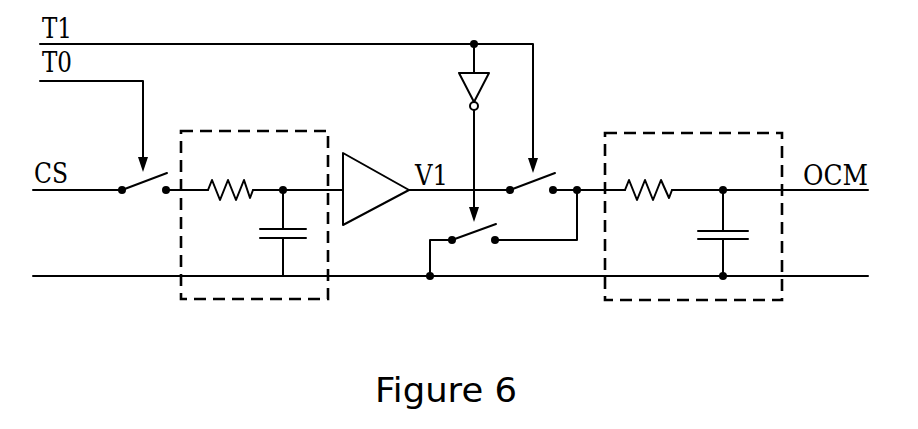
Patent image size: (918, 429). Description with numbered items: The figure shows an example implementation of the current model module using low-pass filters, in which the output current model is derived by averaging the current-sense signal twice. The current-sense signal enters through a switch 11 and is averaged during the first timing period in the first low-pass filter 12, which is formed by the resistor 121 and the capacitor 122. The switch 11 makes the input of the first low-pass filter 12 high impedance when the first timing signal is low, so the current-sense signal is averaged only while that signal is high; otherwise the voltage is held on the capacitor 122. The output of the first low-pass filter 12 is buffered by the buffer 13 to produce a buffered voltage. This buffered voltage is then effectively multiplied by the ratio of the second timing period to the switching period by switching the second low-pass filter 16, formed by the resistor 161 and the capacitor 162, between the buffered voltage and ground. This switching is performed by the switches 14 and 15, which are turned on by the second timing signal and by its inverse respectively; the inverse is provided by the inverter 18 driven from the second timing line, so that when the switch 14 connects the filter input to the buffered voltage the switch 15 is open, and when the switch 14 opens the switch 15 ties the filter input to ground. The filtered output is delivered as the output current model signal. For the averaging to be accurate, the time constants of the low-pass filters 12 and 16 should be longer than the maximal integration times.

The switch 11 is at (144, 203).
The first low-pass filter 12 is at (254, 200).
The resistor 121 is at (230, 172).
The capacitor 122 is at (255, 233).
The buffer 13 is at (376, 181).
The switch 14 is at (531, 200).
The switch 15 is at (503, 234).
The second low-pass filter 16 is at (693, 201).
The resistor 161 is at (648, 173).
The capacitor 162 is at (695, 233).
The inverter 18 is at (457, 133).